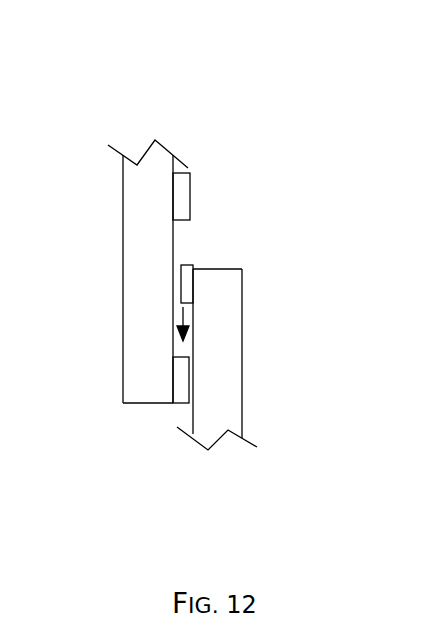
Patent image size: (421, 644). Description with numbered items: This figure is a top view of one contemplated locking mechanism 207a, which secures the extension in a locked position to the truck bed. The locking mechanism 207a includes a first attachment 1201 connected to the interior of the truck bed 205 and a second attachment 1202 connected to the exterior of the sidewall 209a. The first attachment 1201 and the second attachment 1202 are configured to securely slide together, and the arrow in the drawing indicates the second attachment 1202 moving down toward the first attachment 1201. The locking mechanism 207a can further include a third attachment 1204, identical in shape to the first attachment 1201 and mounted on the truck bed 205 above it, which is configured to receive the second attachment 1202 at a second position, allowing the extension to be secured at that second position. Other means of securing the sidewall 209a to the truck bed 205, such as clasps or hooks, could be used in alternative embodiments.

The locking mechanism 207a is at (309, 93).
The truck bed 205 is at (123, 240).
The third attachment 1204 is at (190, 203).
The second attachment 1202 is at (192, 267).
The first attachment 1201 is at (182, 405).
The sidewall 209a is at (242, 383).